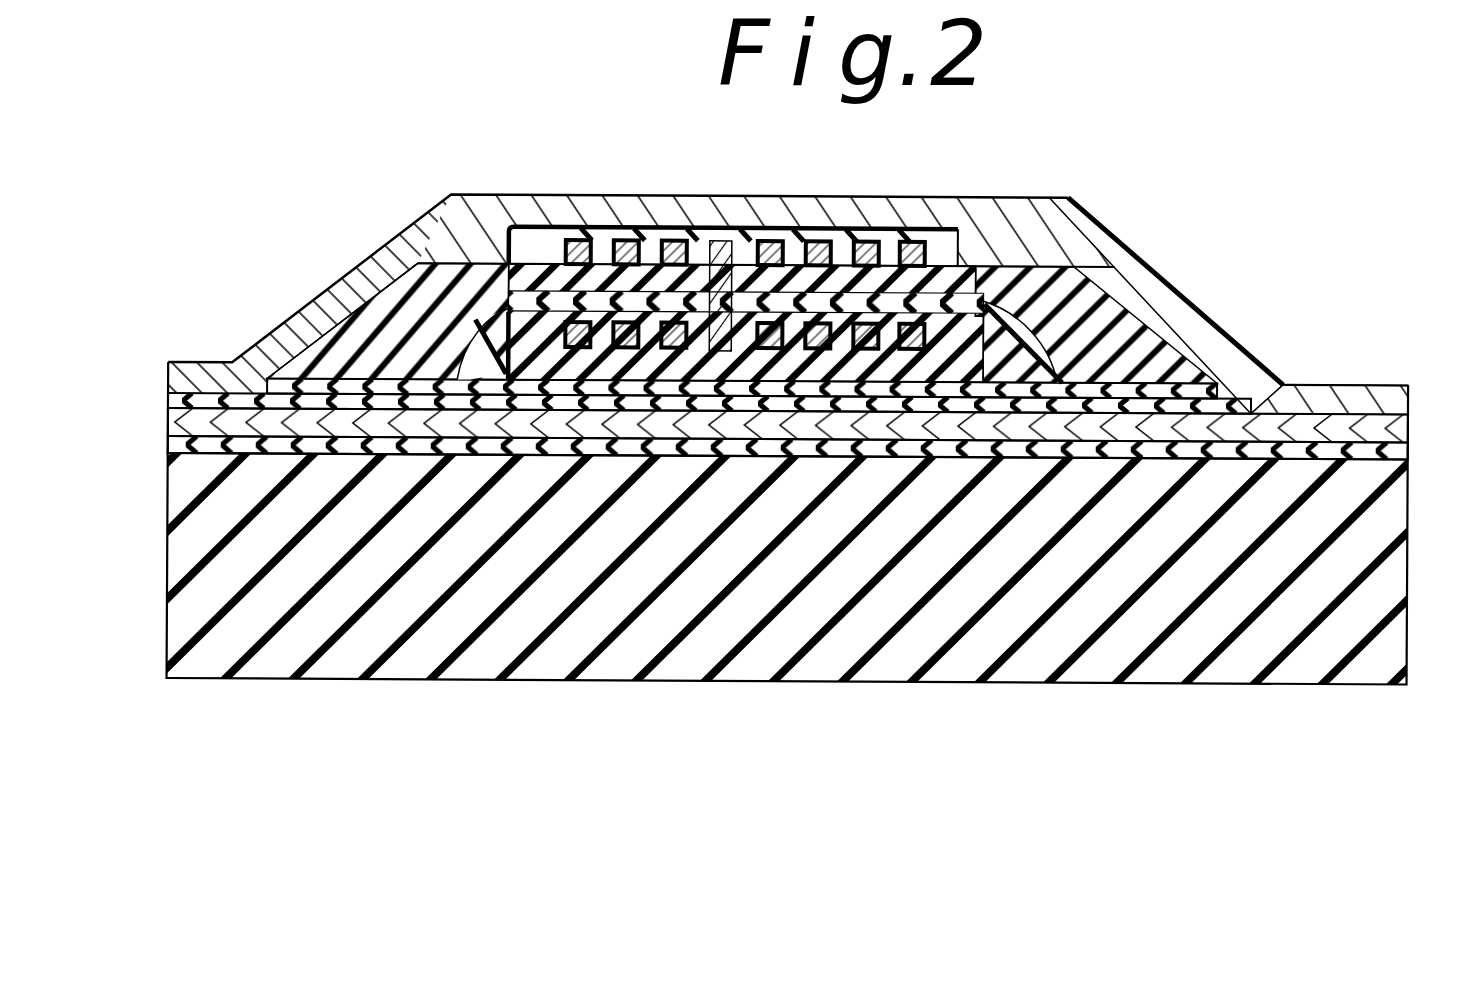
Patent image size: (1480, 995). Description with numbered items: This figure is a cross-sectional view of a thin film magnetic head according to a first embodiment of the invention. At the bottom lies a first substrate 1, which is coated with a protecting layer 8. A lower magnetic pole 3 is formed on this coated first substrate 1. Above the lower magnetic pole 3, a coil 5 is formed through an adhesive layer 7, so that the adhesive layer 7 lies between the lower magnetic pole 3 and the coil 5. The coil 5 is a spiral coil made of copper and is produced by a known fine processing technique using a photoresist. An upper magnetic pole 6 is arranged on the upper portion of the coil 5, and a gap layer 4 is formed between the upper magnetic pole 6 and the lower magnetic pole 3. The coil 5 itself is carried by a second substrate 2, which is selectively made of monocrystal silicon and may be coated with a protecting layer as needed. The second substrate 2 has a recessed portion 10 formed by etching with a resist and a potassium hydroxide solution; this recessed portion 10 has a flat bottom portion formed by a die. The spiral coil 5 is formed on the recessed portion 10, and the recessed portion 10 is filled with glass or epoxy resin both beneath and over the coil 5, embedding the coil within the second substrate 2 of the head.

The first substrate 1 is at (1390, 515).
The second substrate 2 is at (1140, 353).
The lower magnetic pole 3 is at (1397, 427).
The gap layer 4 is at (1240, 405).
The coil 5 is at (915, 262).
The upper magnetic pole 6 is at (1380, 393).
The adhesive layer 7 is at (1225, 400).
The protecting layer 8 is at (1388, 452).
The recessed portion 10 is at (548, 298).